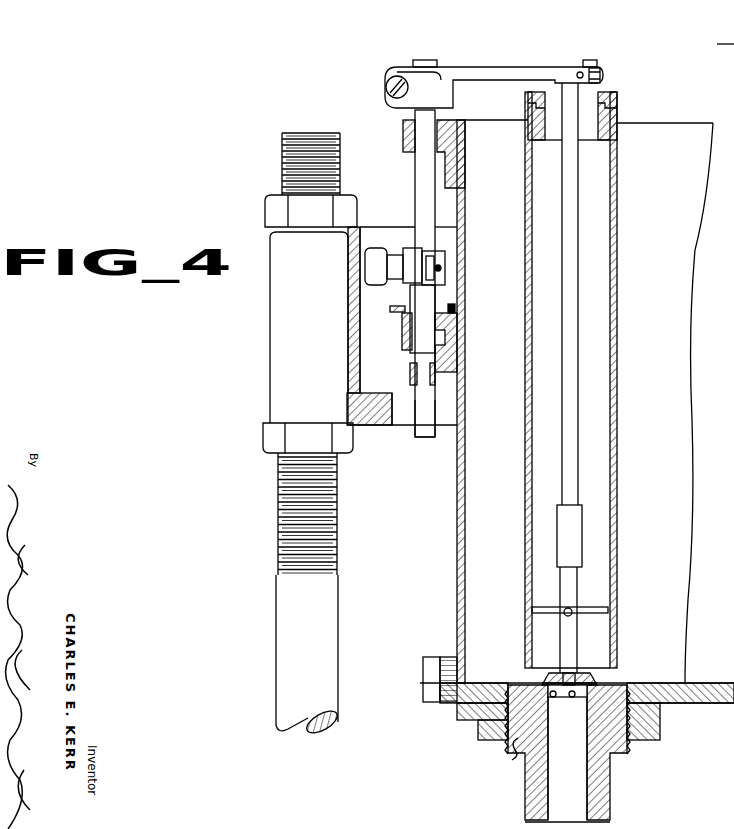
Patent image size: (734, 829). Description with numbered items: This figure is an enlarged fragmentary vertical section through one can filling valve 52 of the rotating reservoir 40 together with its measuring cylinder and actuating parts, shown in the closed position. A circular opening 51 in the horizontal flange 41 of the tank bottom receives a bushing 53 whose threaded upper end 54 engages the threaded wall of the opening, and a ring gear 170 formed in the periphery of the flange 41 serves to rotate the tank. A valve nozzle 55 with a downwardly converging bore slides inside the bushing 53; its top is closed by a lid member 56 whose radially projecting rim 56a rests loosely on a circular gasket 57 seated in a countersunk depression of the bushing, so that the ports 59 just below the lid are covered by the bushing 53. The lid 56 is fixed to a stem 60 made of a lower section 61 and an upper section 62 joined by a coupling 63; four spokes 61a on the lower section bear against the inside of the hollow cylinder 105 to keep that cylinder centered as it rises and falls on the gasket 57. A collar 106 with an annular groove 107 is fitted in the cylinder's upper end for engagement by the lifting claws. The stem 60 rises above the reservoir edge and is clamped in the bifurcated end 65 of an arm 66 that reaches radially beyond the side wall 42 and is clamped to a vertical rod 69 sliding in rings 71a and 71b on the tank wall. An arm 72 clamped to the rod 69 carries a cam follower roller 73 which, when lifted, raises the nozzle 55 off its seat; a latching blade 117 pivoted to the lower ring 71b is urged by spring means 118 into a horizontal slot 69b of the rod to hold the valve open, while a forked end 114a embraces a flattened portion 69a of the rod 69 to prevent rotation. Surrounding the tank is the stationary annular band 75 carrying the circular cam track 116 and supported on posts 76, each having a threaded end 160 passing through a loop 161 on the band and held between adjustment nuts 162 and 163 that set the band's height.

The reservoir 40 is at (664, 335).
The horizontal flange 41 is at (653, 683).
The side wall 42 is at (458, 573).
The circular opening 51 is at (505, 703).
The can filling valve 52 is at (600, 785).
The bushing 53 is at (605, 803).
The threaded upper end 54 is at (512, 752).
The valve nozzle 55 is at (578, 788).
The lid member 56 is at (582, 676).
The radially projecting rim 56a is at (600, 683).
The circular gasket 57 is at (525, 683).
The ports 59 is at (556, 698).
The stem 60 is at (570, 411).
The lower stem section 61 is at (568, 588).
The spokes 61a is at (596, 609).
The upper stem section 62 is at (570, 245).
The coupling 63 is at (575, 541).
The bifurcated end 65 is at (590, 67).
The arm 66 is at (492, 76).
The rod 69 is at (426, 173).
The flattened portion 69a is at (415, 418).
The horizontal slot 69b is at (446, 336).
The upper ring 71a is at (404, 131).
The lower ring 71b is at (406, 330).
The arm 72 is at (448, 259).
The cam follower roller 73 is at (375, 258).
The stationary annular band 75 is at (356, 306).
The post 76 is at (300, 635).
The hollow cylinder 105 is at (614, 207).
The collar 106 is at (614, 115).
The annular groove 107 is at (614, 104).
The forked end 114a is at (412, 381).
The circular cam track 116 is at (445, 393).
The latching blade 117 is at (396, 308).
The spring means 118 is at (457, 309).
The threaded end 160 is at (300, 545).
The loop 161 is at (300, 370).
The upper adjustment nut 162 is at (286, 217).
The lower adjustment nut 163 is at (275, 444).
The ring gear 170 is at (430, 683).